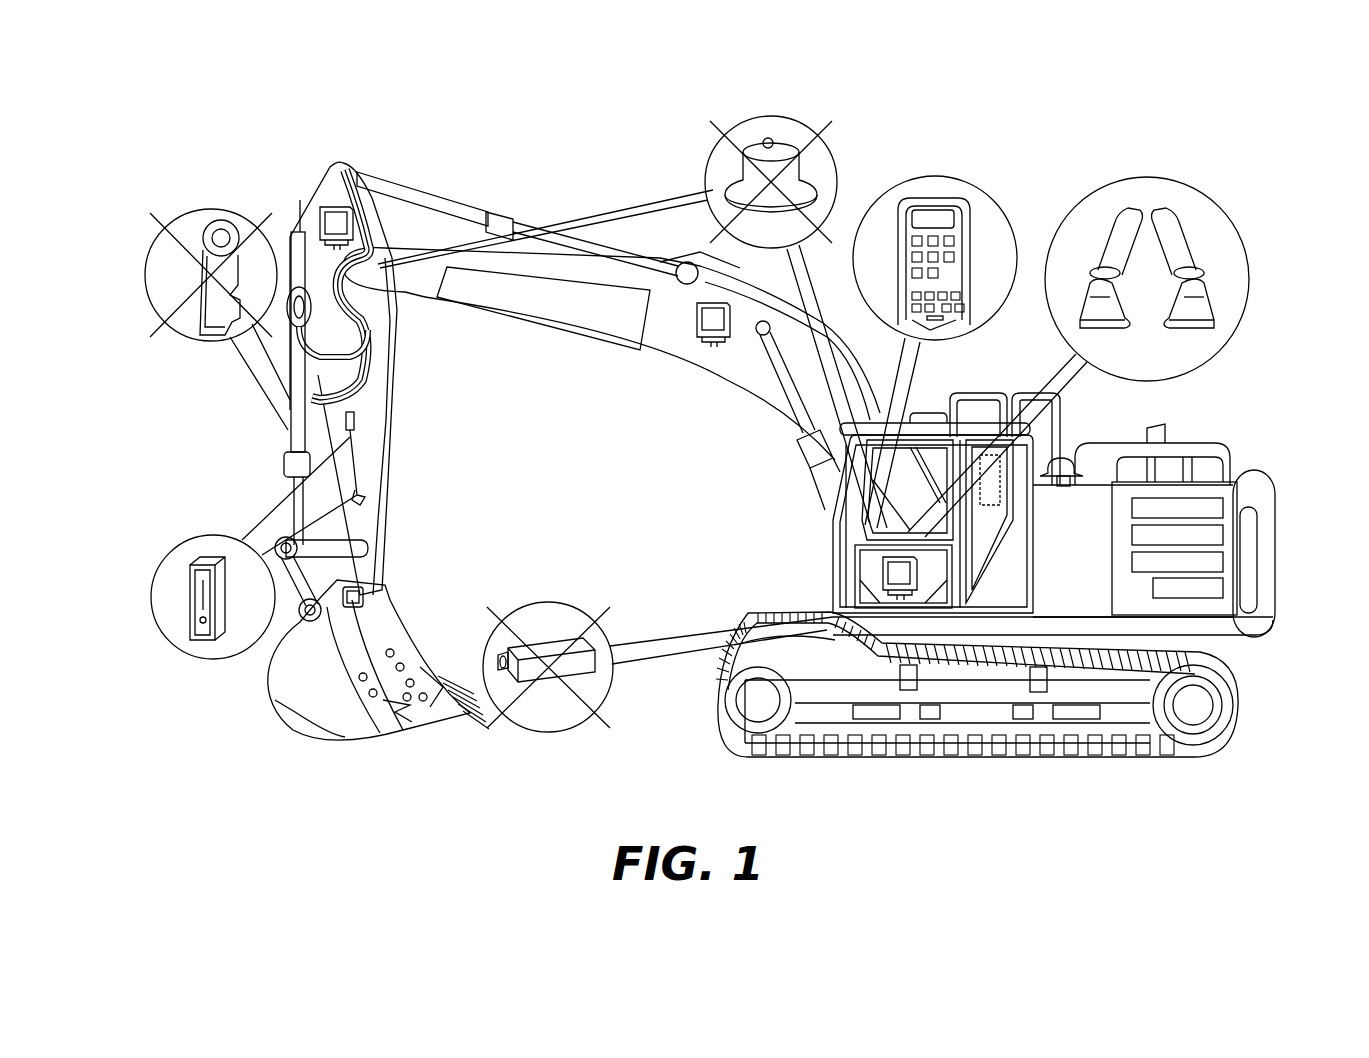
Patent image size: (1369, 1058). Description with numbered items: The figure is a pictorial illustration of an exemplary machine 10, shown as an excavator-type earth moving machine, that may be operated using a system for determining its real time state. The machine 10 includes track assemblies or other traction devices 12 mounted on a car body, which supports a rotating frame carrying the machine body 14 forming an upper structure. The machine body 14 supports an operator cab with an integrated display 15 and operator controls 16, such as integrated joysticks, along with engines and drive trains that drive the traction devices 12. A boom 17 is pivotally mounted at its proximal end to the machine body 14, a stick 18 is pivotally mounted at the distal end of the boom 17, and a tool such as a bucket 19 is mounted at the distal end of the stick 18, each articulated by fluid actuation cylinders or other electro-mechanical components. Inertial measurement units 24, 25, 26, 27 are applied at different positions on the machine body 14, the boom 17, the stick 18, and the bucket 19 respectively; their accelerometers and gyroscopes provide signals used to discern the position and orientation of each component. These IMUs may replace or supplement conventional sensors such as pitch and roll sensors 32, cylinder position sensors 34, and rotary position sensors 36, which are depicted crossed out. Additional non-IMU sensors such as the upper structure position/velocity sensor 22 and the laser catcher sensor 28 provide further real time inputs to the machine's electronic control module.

The machine 10 is at (1270, 420).
The traction devices 12 is at (1243, 712).
The machine body 14 is at (1273, 557).
The integrated display 15 is at (947, 178).
The operator controls 16 is at (1170, 180).
The boom 17 is at (747, 370).
The stick 18 is at (367, 472).
The bucket 19 is at (323, 707).
The upper structure position/velocity sensor 22 is at (983, 603).
The inertial measurement unit 24 is at (883, 570).
The inertial measurement unit 25 is at (697, 317).
The inertial measurement unit 26 is at (343, 165).
The inertial measurement unit 27 is at (380, 587).
The laser catcher sensor 28 is at (182, 660).
The pitch and roll sensors 32 is at (550, 733).
The cylinder position sensors 34 is at (212, 208).
The rotary position sensors 36 is at (787, 118).